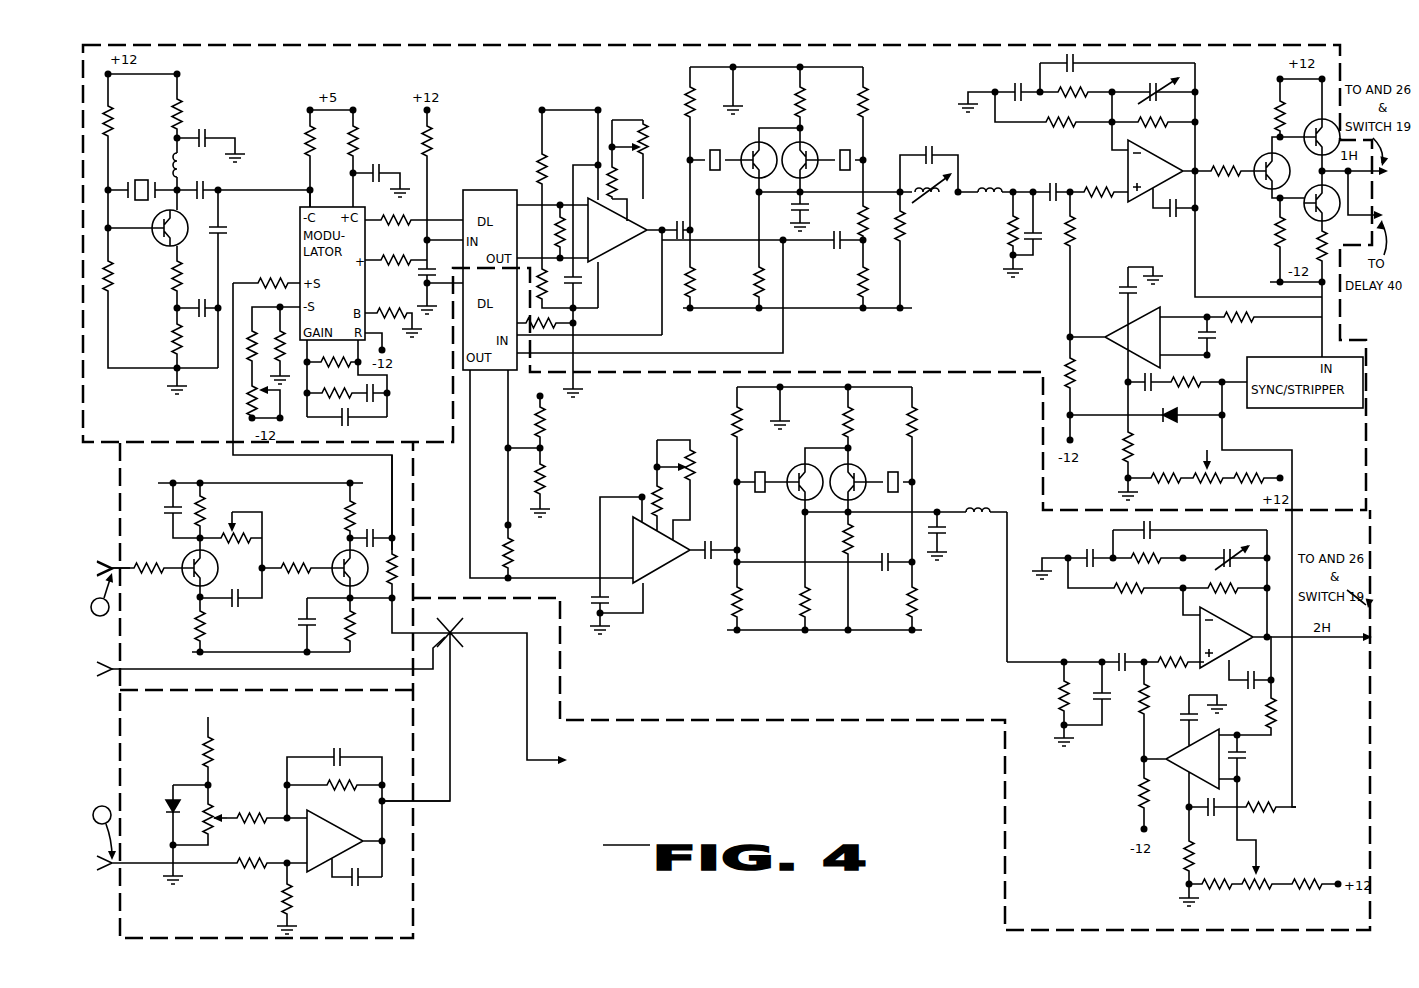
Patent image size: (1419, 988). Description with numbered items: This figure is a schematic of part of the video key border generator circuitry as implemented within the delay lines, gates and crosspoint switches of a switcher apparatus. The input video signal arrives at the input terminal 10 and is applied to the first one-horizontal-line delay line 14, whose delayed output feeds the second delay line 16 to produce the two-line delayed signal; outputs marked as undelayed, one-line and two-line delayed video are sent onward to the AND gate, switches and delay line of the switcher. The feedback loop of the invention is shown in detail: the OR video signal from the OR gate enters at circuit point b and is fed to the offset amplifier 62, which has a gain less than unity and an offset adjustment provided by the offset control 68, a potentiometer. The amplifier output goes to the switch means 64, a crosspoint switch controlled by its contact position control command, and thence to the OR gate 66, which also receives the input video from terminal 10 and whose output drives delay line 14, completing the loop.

The input terminal 10 is at (111, 565).
The first one horizontal line (1H) delay line 14 is at (642, 82).
The second 1H delay line 16 is at (668, 672).
The offset amplifier 62 is at (304, 726).
The switch means 64 is at (499, 692).
The OR gate 66 is at (164, 642).
The offset control 68 is at (218, 817).